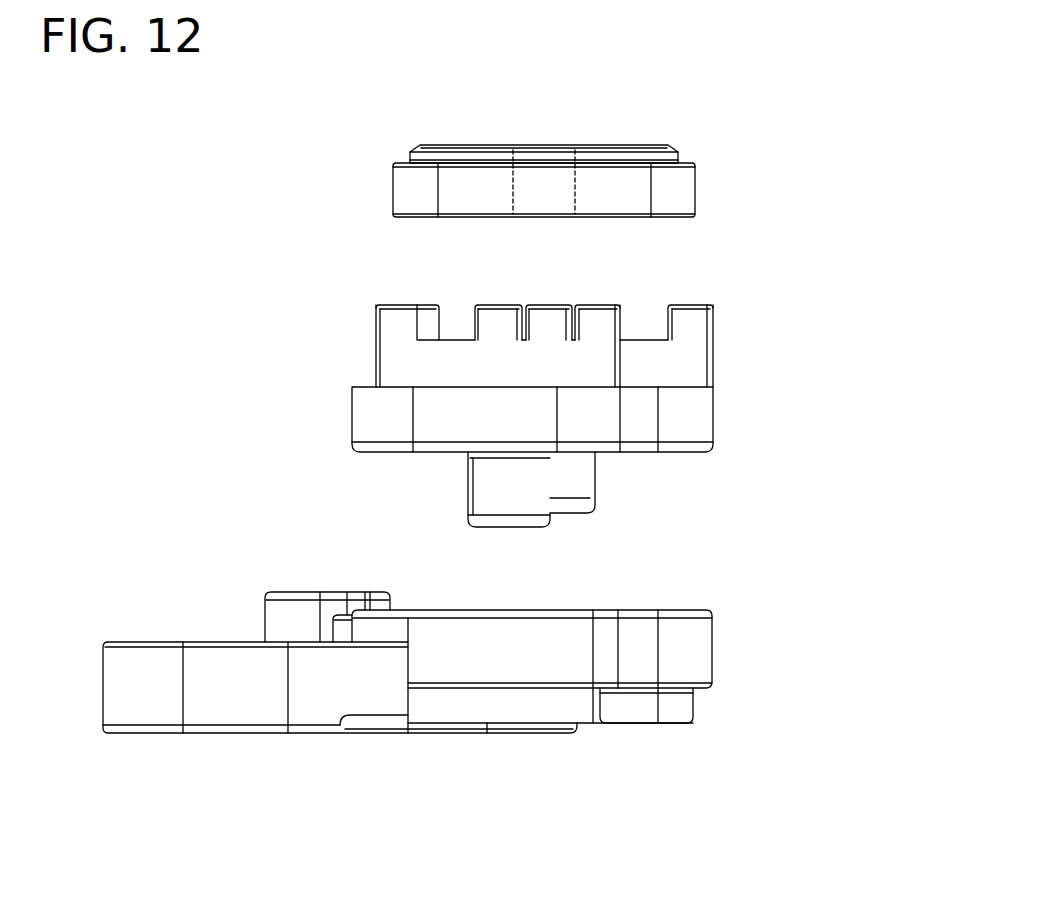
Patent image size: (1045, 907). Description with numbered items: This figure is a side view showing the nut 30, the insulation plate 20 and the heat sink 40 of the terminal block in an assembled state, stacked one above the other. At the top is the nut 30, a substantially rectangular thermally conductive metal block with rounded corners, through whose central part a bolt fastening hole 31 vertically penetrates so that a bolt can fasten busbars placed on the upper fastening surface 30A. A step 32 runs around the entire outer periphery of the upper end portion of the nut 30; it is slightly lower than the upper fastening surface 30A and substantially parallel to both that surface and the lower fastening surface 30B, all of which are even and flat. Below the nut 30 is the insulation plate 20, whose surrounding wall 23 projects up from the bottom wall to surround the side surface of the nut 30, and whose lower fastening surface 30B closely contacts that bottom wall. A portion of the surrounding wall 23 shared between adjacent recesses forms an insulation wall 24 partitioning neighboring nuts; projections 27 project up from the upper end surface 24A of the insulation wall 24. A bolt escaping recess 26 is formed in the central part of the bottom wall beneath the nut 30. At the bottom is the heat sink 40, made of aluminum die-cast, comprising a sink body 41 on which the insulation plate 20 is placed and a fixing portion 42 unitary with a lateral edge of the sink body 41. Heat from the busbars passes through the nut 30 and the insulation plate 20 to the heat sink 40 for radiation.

The insulation plate 20 is at (515, 386).
The surrounding wall 23 is at (363, 422).
The insulation wall 24 is at (642, 332).
The upper end surface of insulation wall 24A is at (462, 337).
The bolt escaping recess 26 is at (578, 483).
The projection 27 is at (403, 322).
The nut 30 is at (520, 169).
The upper fastening surface 30A is at (462, 143).
The lower fastening surface 30B is at (465, 218).
The bolt fastening hole 31 is at (513, 186).
The step 32 is at (682, 160).
The heat sink 40 is at (438, 677).
The sink body 41 is at (705, 650).
The fixing portion 42 is at (264, 713).